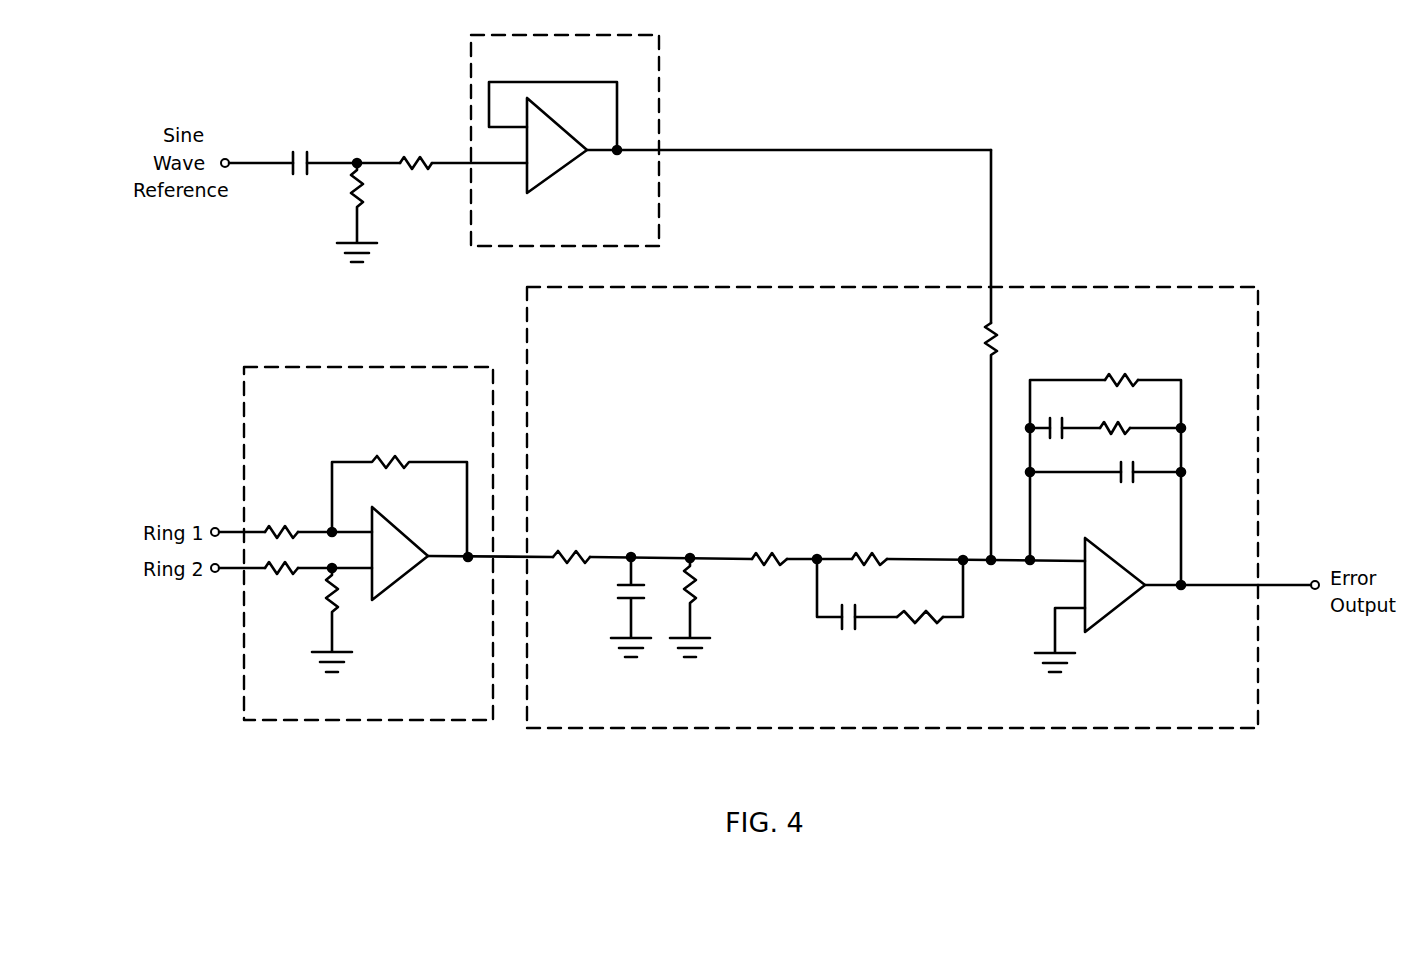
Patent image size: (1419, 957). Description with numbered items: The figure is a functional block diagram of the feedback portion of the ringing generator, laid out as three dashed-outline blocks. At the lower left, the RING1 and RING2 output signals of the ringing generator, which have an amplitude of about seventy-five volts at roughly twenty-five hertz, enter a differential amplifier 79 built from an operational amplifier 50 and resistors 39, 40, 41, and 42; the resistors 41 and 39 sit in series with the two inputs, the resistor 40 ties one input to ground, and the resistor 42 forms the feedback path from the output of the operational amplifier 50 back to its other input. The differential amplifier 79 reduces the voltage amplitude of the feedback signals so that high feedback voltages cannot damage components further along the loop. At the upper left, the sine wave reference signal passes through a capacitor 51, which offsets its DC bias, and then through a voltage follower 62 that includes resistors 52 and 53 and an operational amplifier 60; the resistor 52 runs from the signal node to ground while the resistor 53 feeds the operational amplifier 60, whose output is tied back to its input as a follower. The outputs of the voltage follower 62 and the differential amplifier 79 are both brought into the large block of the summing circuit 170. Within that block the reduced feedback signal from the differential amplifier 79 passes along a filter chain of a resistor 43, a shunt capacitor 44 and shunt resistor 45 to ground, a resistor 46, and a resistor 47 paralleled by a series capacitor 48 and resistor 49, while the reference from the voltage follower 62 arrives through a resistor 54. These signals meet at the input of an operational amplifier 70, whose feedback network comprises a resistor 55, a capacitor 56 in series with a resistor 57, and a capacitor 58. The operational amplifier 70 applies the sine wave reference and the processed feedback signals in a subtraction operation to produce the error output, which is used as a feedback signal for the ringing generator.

The resistor 39 is at (267, 572).
The resistor 40 is at (335, 610).
The resistor 41 is at (268, 528).
The resistor 42 is at (398, 460).
The resistor 43 is at (580, 552).
The capacitor 44 is at (622, 597).
The resistor 45 is at (697, 598).
The resistor 46 is at (753, 556).
The resistor 47 is at (878, 556).
The capacitor 48 is at (842, 624).
The resistor 49 is at (917, 623).
The operational amplifier 50 is at (393, 557).
The capacitor 51 is at (293, 150).
The resistor 52 is at (363, 188).
The resistor 53 is at (402, 155).
The resistor 54 is at (990, 327).
The feedback resistor 55 is at (1107, 377).
The capacitor 56 is at (1064, 425).
The resistor 57 is at (1129, 428).
The capacitor 58 is at (1121, 474).
The operational amplifier 60 is at (547, 152).
The voltage follower 62 is at (632, 50).
The operational amplifier 70 is at (1105, 595).
The differential amplifier 79 is at (417, 702).
The summing circuit 170 is at (1197, 305).